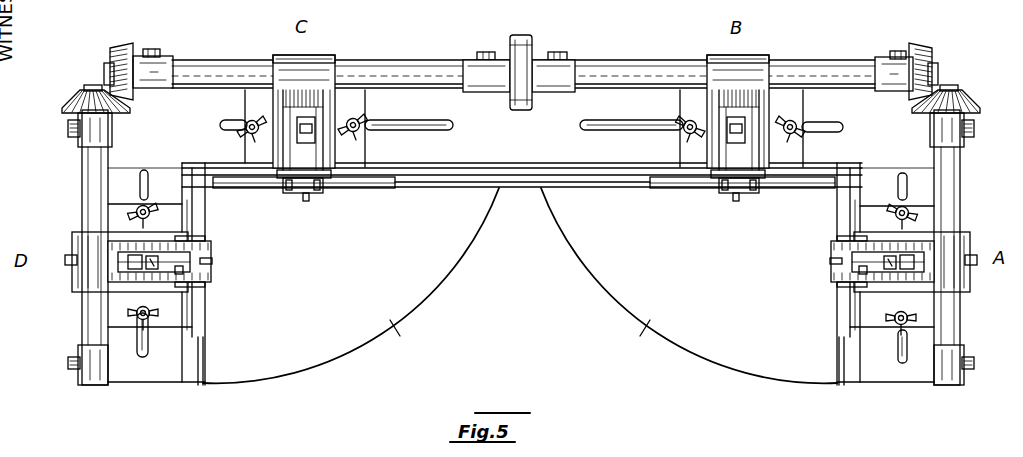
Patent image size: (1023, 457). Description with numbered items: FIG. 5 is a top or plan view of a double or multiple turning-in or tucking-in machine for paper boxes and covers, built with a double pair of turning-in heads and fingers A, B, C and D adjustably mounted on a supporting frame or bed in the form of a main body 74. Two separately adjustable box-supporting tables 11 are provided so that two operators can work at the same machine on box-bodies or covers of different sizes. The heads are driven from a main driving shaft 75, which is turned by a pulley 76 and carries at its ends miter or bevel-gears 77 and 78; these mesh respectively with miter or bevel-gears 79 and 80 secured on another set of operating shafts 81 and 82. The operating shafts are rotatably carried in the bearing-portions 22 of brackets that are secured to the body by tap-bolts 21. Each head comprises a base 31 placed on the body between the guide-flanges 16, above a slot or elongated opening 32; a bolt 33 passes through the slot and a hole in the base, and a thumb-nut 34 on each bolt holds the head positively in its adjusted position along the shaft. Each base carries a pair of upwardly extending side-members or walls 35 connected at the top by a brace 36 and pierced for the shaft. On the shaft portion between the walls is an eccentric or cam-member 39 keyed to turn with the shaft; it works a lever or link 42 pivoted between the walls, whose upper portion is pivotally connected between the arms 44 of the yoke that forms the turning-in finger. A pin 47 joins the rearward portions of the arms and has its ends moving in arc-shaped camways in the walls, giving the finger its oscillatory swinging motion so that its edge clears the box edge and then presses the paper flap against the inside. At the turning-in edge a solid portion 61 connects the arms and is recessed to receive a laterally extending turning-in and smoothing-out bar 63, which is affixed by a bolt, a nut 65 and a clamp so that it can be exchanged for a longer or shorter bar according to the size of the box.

The box-supporting table 11 is at (520, 285).
The guide-flange 16 is at (185, 170).
The tap-bolt 21 is at (150, 49).
The bearing-portion 22 is at (165, 55).
The base 31 is at (110, 210).
The slot or elongated opening 32 is at (143, 170).
The bolt 33 is at (250, 133).
The thumb-nut 34 is at (246, 120).
The side-member or wall 35 is at (278, 178).
The brace 36 is at (285, 58).
The eccentric or cam-member 39 is at (305, 118).
The lever or link 42 is at (295, 193).
The arm 44 is at (283, 92).
The pin 47 is at (308, 125).
The solid portion 61 is at (320, 190).
The turning-in and smoothing-out bar 63 is at (260, 188).
The nut 65 is at (307, 201).
The main body 74 is at (532, 172).
The main driving shaft 75 is at (192, 70).
The pulley 76 is at (522, 36).
The miter or bevel-gear 77 is at (918, 46).
The miter or bevel-gear 78 is at (985, 85).
The miter or bevel-gear 79 is at (122, 50).
The miter or bevel-gear 80 is at (80, 92).
The operating shaft 81 is at (962, 178).
The operating shaft 82 is at (86, 182).